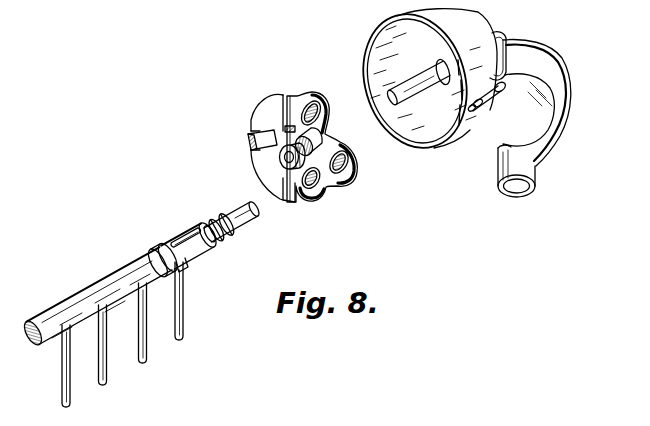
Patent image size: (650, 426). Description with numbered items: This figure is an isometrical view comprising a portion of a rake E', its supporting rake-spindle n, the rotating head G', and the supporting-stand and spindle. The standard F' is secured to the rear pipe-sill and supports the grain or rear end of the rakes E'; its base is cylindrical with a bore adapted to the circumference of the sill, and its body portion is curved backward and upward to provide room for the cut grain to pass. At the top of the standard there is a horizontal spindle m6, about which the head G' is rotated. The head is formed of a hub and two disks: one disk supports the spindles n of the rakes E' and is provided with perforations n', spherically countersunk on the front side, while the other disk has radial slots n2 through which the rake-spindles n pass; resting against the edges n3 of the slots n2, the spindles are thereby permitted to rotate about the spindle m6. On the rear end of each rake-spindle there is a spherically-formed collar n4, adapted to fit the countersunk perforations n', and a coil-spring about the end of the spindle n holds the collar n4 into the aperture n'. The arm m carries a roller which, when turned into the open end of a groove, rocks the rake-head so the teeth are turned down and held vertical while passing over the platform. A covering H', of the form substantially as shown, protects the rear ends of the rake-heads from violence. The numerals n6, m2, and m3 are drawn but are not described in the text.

The rake E' is at (141, 303).
The pins n6 is at (137, 363).
The spherically-formed collar n4 is at (220, 218).
The rake-spindle n is at (248, 228).
The head G' is at (299, 137).
The lobed plate m2 is at (329, 130).
The perforations n' is at (314, 154).
The hub m3 is at (285, 158).
The arm m is at (309, 151).
The radial slots n2 is at (262, 138).
The edges of the slots n3 is at (249, 139).
The covering H' is at (427, 81).
The horizontal spindle m6 is at (413, 91).
The standard F' is at (541, 114).